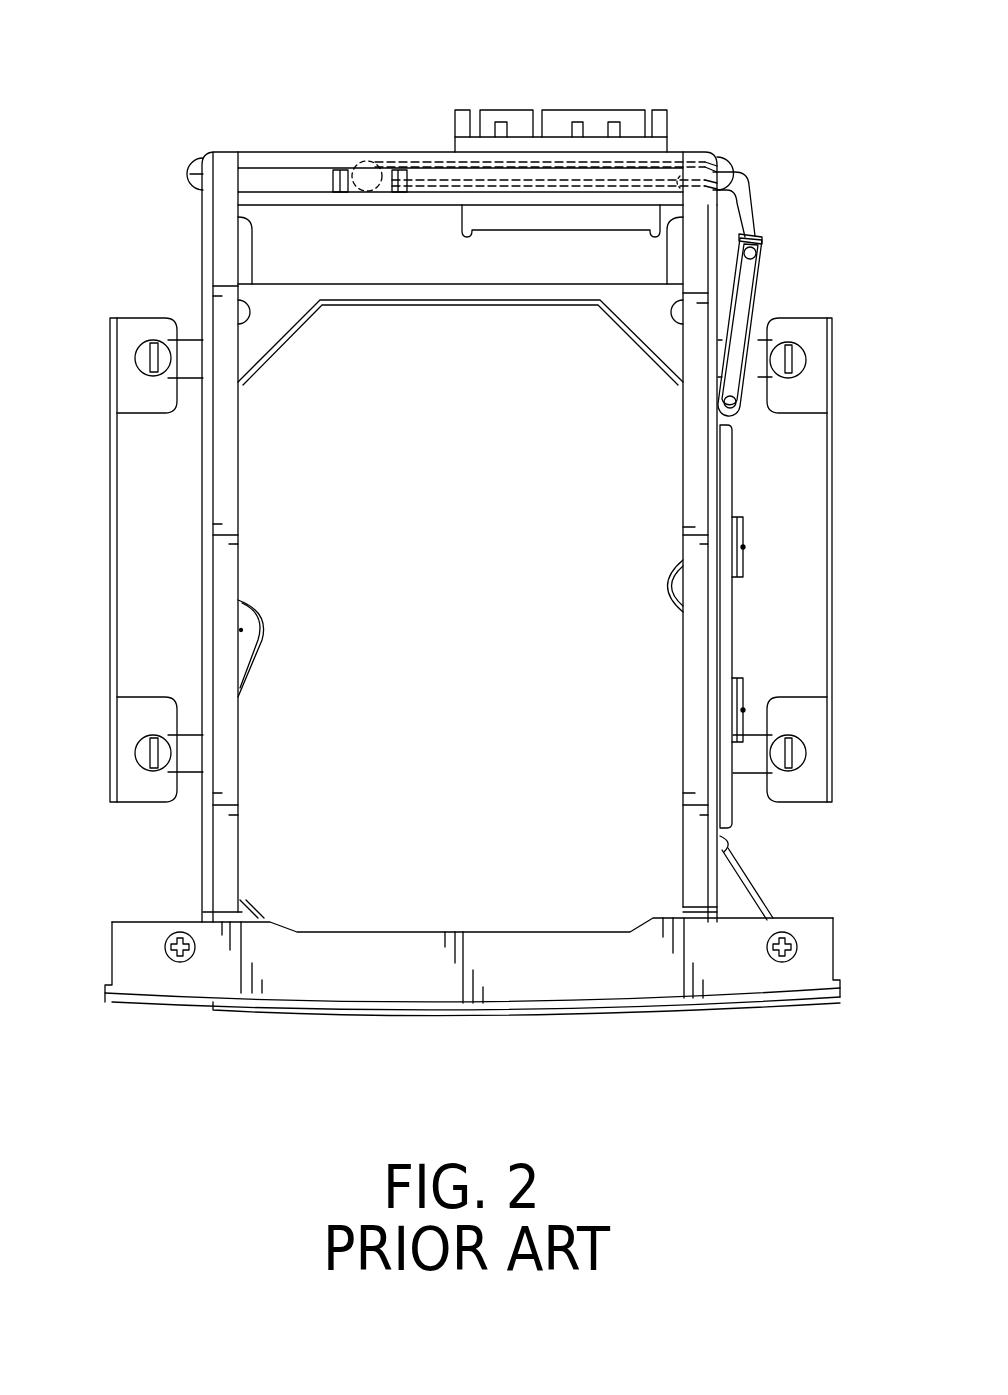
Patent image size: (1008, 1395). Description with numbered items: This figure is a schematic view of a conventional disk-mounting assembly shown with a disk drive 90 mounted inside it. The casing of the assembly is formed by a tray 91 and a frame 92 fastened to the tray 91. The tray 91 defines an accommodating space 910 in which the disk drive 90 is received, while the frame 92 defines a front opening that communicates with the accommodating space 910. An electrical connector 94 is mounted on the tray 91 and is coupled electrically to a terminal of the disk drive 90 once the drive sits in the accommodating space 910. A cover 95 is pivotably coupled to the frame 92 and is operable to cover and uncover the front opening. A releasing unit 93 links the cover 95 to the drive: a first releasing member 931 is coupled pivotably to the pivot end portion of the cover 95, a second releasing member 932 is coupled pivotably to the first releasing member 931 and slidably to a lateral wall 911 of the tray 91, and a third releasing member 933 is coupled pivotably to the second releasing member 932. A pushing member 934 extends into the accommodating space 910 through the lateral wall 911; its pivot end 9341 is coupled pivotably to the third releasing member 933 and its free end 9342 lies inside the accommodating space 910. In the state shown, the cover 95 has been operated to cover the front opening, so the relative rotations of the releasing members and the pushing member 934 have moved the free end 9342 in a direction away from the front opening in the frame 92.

The disk drive 90 is at (537, 898).
The tray 91 is at (205, 262).
The accommodating space 910 is at (265, 505).
The lateral wall 911 is at (695, 860).
The frame 92 is at (133, 922).
The releasing unit 93 is at (812, 672).
The first releasing member 931 is at (735, 872).
The second releasing member 932 is at (733, 490).
The third releasing member 933 is at (758, 292).
The pushing member 934 is at (799, 254).
The pivot end 9341 is at (752, 218).
The free end 9342 is at (367, 176).
The electrical connector 94 is at (556, 108).
The cover 95 is at (270, 1010).